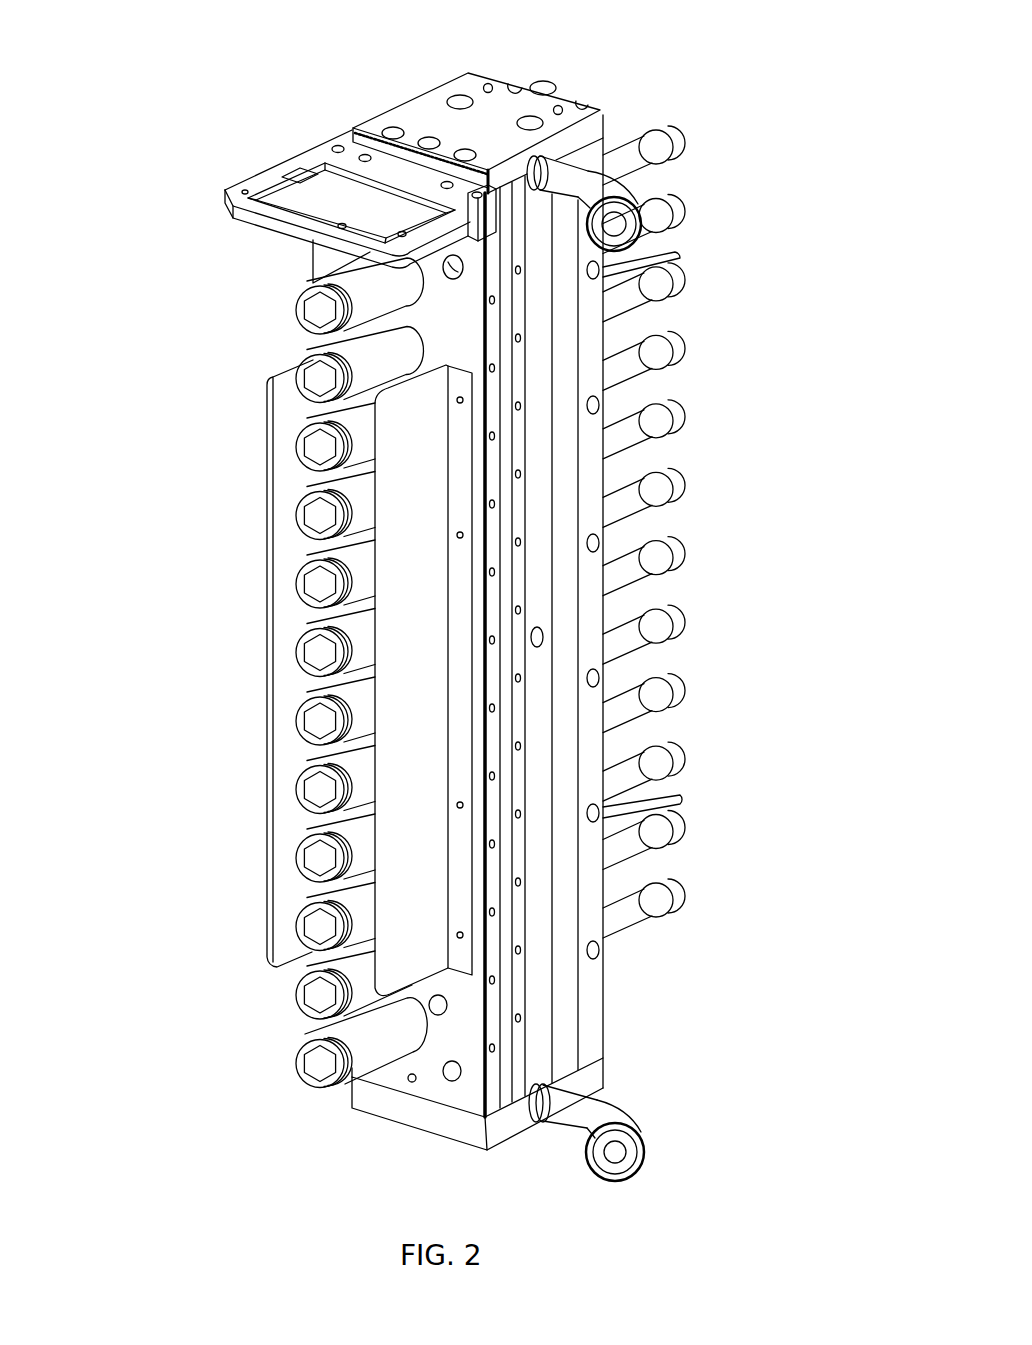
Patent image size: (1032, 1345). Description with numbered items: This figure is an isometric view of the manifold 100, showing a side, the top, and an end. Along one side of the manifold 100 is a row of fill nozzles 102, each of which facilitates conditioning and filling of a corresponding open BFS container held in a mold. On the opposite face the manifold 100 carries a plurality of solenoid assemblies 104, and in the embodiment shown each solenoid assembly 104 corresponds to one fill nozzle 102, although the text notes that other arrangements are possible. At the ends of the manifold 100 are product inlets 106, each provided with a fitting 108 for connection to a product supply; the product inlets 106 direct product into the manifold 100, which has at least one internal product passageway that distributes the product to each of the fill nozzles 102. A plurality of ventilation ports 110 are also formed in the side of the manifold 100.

The manifold 100 is at (652, 80).
The fill nozzle 102 is at (692, 893).
The solenoid assembly 104 is at (296, 1053).
The product inlet 106 is at (603, 1098).
The fitting 108 is at (648, 1142).
The ventilation port 110 is at (605, 952).